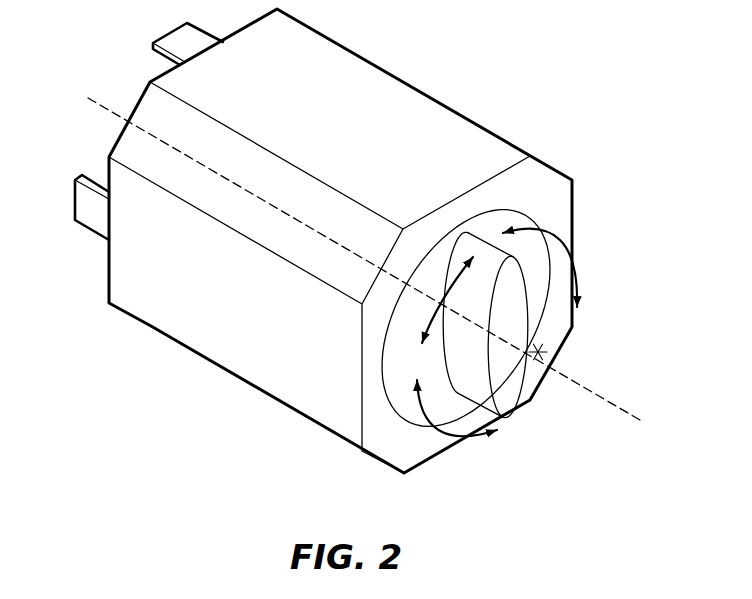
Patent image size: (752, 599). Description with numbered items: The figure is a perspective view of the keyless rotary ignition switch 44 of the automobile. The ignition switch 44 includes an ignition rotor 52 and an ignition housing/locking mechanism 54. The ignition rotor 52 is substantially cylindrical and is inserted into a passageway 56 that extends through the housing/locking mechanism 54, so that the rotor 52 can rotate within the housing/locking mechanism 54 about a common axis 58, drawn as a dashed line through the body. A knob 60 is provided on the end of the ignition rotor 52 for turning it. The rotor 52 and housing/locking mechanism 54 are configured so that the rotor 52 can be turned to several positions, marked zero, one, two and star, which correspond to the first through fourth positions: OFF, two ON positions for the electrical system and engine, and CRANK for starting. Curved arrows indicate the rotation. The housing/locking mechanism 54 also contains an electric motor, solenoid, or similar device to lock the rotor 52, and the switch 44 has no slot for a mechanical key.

The ignition switch 44 is at (325, 241).
The ignition rotor 52 is at (437, 402).
The ignition housing/locking mechanism 54 is at (372, 100).
The passageway 56 is at (393, 400).
The common axis 58 is at (108, 110).
The knob 60 is at (508, 385).